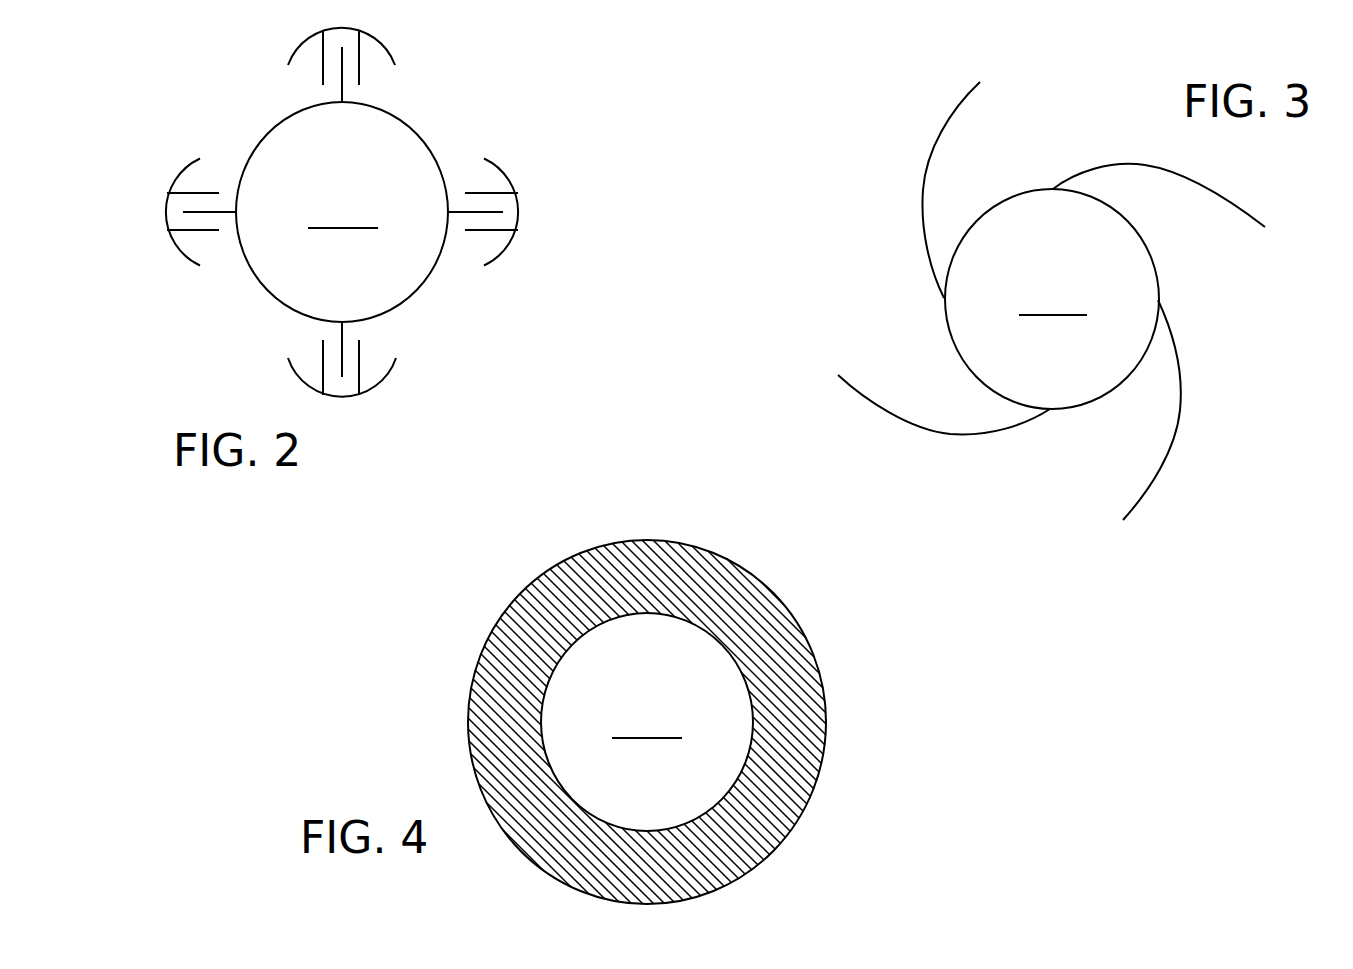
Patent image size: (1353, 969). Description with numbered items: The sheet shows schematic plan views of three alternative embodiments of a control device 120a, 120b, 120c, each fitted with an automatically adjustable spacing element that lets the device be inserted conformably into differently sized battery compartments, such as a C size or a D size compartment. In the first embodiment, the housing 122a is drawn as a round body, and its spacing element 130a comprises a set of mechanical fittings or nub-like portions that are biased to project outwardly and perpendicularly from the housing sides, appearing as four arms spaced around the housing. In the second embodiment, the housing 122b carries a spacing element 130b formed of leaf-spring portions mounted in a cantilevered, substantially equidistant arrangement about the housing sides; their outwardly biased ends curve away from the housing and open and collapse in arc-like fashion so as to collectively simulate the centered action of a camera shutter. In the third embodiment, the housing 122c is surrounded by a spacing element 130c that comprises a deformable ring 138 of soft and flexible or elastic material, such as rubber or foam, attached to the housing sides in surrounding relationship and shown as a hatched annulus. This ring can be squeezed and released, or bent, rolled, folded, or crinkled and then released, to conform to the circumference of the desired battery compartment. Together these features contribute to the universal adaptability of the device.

In FIG. 2, the control device 120a is at (425, 212).
In FIG. 2, the housing 122a is at (342, 212).
In FIG. 2, the spacing element 130a is at (384, 212).
In FIG. 3, the control device 120b is at (1054, 338).
In FIG. 3, the housing 122b is at (1052, 299).
In FIG. 3, the spacing element 130b is at (1054, 300).
In FIG. 4, the control device 120c is at (694, 722).
In FIG. 4, the housing 122c is at (522, 595).
In FIG. 4, the spacing element 130c is at (596, 722).
In FIG. 4, the deformable ring 138 is at (482, 703).